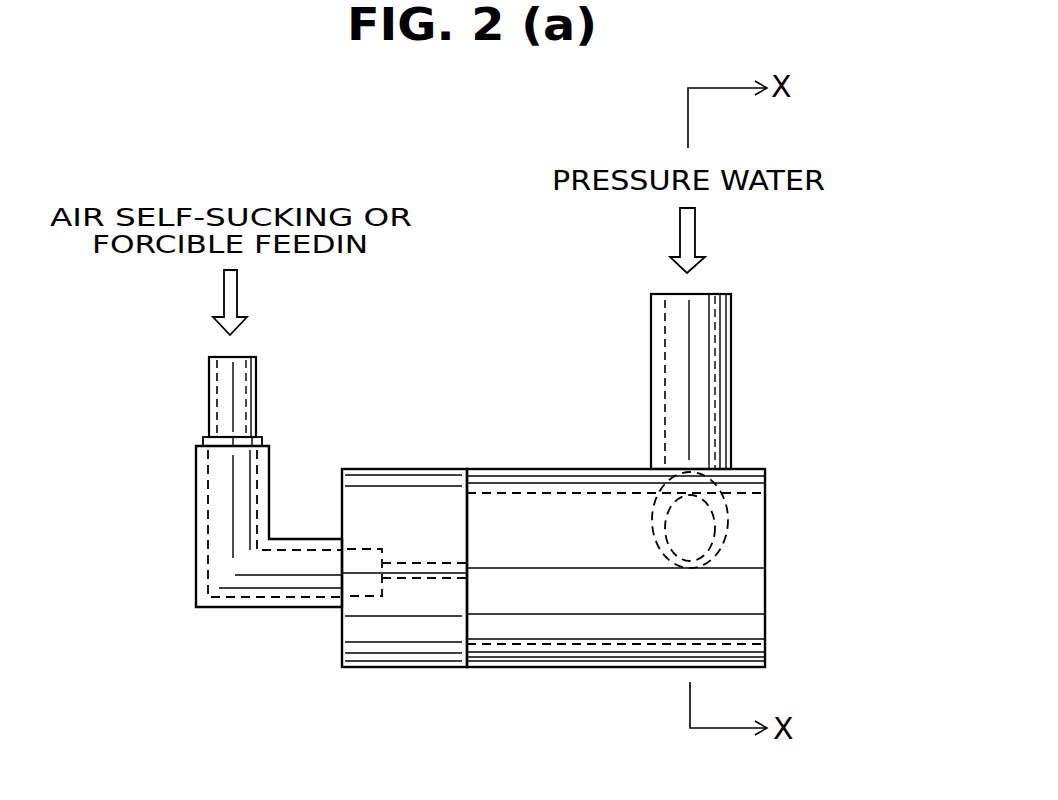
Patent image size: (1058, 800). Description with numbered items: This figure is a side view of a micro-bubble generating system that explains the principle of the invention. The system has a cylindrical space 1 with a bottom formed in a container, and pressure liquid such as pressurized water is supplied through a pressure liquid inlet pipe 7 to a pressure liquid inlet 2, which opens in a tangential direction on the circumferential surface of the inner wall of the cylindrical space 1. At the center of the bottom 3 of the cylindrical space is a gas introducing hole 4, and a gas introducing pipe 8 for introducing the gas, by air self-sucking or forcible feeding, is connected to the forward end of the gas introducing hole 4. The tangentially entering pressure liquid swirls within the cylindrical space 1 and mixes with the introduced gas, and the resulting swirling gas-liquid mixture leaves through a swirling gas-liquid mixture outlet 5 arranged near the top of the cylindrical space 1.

The cylindrical space 1 is at (538, 520).
The pressure liquid inlet 2 is at (705, 497).
The bottom 3 is at (467, 623).
The gas introducing hole 4 is at (402, 580).
The swirling gas-liquid mixture outlet 5 is at (755, 600).
The pressure liquid inlet pipe 7 is at (657, 328).
The gas introducing pipe 8 is at (198, 511).